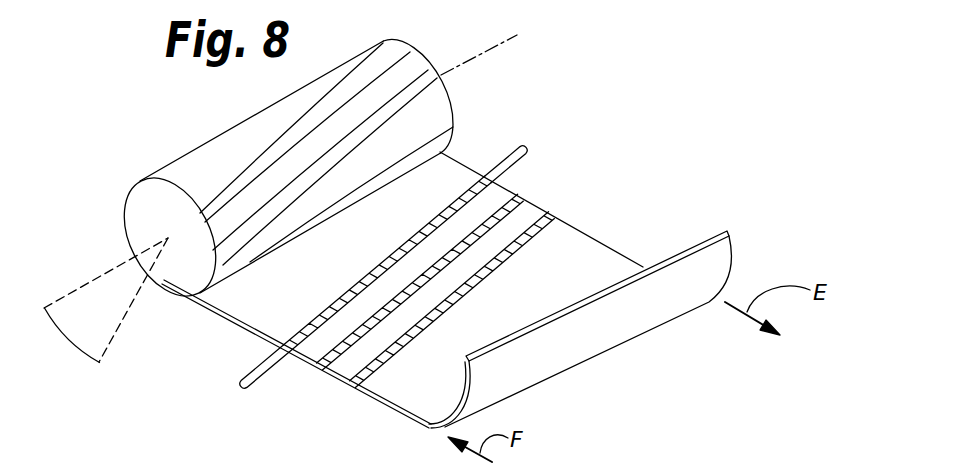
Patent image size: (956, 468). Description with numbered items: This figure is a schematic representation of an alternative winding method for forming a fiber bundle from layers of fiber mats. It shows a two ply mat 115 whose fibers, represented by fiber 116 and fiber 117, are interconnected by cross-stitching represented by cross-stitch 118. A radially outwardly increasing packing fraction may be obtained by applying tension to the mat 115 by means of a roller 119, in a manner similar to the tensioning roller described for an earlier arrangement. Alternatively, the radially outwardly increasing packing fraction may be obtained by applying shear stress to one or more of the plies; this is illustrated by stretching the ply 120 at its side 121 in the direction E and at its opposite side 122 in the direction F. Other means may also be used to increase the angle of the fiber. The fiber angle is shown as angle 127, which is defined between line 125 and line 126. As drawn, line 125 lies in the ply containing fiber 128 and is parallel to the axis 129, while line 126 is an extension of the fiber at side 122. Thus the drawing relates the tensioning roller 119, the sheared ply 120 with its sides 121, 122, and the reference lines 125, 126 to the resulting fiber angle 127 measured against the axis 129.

The two ply mat 115 is at (628, 248).
The fiber 116 is at (337, 366).
The fiber 117 is at (505, 258).
The cross-stitch 118 is at (382, 383).
The roller 119 is at (268, 377).
The ply 120 is at (575, 258).
The side 121 is at (541, 207).
The side 122 is at (433, 429).
The line 125 is at (80, 283).
The line 126 is at (116, 340).
The angle 127 is at (70, 338).
The fiber 128 is at (257, 146).
The axis 129 is at (493, 43).